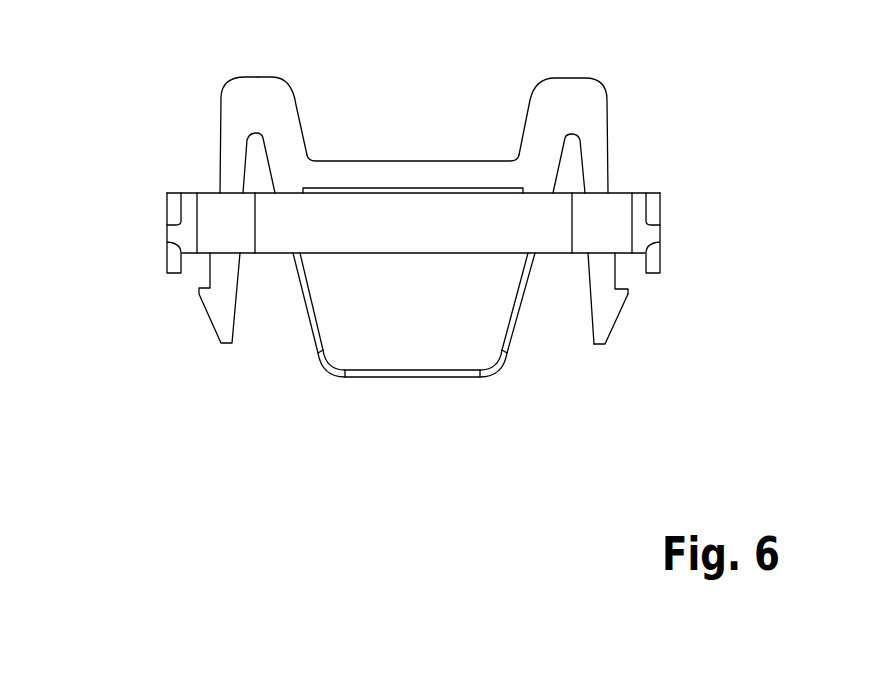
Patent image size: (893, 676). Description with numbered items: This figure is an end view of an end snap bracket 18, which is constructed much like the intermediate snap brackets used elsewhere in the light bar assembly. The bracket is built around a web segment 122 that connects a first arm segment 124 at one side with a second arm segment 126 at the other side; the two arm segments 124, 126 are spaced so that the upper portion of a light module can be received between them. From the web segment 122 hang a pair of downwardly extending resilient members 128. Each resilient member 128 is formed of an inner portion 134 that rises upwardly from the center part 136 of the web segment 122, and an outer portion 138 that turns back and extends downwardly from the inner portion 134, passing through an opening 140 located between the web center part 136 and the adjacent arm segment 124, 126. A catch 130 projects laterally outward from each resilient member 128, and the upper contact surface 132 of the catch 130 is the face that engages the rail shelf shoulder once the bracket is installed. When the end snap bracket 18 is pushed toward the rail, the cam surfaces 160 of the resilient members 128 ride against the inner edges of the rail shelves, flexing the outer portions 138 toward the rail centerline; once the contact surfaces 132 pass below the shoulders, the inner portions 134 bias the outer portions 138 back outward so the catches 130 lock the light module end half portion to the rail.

The end snap bracket 18 is at (148, 65).
The web segment 122 is at (407, 161).
The first arm segment 124 is at (165, 232).
The second arm segment 126 is at (663, 233).
The resilient member 128 is at (218, 133).
The catch 130 is at (200, 292).
The upper contact surface 132 is at (622, 280).
The inner portion 134 is at (297, 105).
The center part 136 is at (413, 213).
The outer portion 138 is at (598, 157).
The opening 140 is at (617, 193).
The cam surface 160 is at (615, 323).